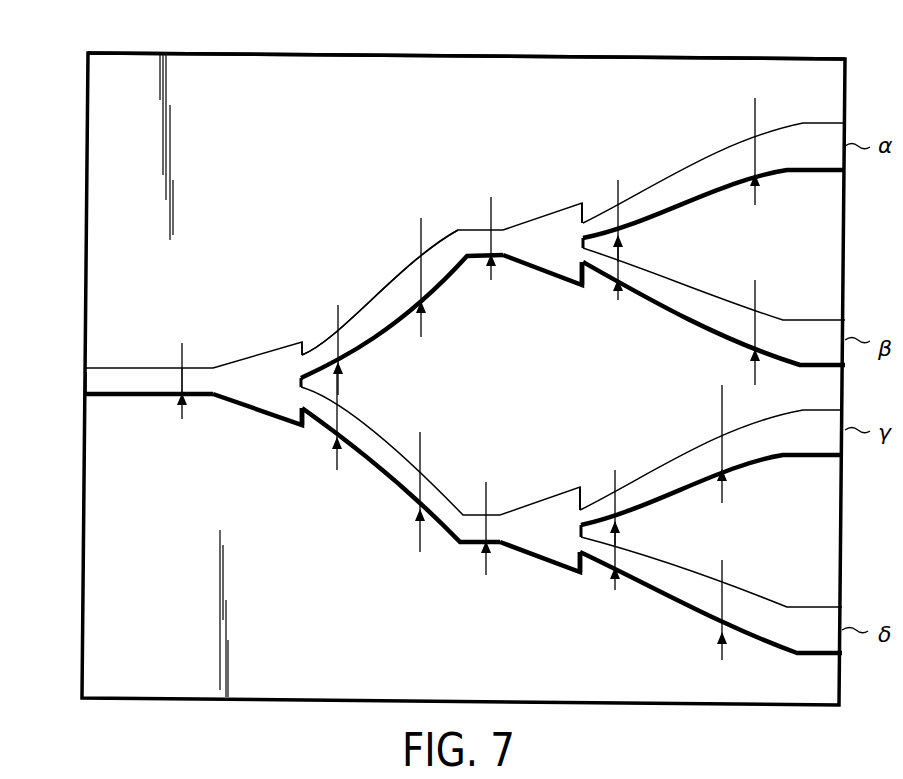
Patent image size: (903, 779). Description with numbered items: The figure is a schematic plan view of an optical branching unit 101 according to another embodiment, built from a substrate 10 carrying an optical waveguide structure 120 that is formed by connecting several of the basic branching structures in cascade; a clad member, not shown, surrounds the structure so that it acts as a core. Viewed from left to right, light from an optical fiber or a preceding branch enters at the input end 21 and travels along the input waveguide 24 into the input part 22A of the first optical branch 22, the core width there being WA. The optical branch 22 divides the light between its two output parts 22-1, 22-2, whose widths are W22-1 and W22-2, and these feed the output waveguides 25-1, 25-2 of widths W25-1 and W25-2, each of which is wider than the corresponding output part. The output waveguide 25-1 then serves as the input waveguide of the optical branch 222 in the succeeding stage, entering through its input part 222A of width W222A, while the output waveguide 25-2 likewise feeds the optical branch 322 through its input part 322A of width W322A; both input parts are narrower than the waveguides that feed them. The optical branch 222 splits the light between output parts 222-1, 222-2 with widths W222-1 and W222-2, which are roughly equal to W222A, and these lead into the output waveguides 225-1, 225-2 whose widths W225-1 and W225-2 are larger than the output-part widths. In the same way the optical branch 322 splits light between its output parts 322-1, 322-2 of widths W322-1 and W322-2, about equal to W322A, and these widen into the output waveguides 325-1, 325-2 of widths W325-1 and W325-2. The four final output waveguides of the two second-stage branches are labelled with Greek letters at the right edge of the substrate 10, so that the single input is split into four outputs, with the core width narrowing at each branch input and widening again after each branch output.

The substrate 10 is at (157, 684).
The optical branching unit 101 is at (571, 56).
The input end 21 is at (86, 382).
The input waveguide 24 is at (137, 385).
The input part of optical branch 22A is at (197, 386).
The width WA is at (182, 368).
The optical branch 22 is at (268, 418).
The output part of optical branch 22-1 is at (308, 352).
The output part of optical branch 22-2 is at (308, 417).
The optical waveguide structure 120 is at (408, 250).
The output waveguide 25-1 is at (445, 275).
The output waveguide 25-2 is at (430, 495).
The width W22-1 is at (348, 332).
The width W22-2 is at (345, 445).
The width W25-1 is at (424, 275).
The width W25-2 is at (432, 520).
The optical branch 222 is at (562, 168).
The input part of optical branch 222A is at (510, 240).
The width W222A is at (497, 243).
The output part of optical branch 222-1 is at (593, 224).
The output part of optical branch 222-2 is at (582, 282).
The width W222-1 is at (636, 215).
The width W222-2 is at (622, 267).
The output waveguide 225-1 is at (768, 150).
The output waveguide 225-2 is at (768, 337).
The width W225-1 is at (768, 150).
The width W225-2 is at (762, 335).
The optical branch 322 is at (548, 438).
The input part of optical branch 322A is at (508, 525).
The width W322A is at (488, 535).
The output part of optical branch 322-1 is at (592, 513).
The output part of optical branch 322-2 is at (585, 554).
The width W322-1 is at (626, 505).
The width W322-2 is at (620, 565).
The output waveguide 325-1 is at (752, 443).
The output waveguide 325-2 is at (752, 614).
The width W325-1 is at (735, 462).
The width W325-2 is at (728, 620).